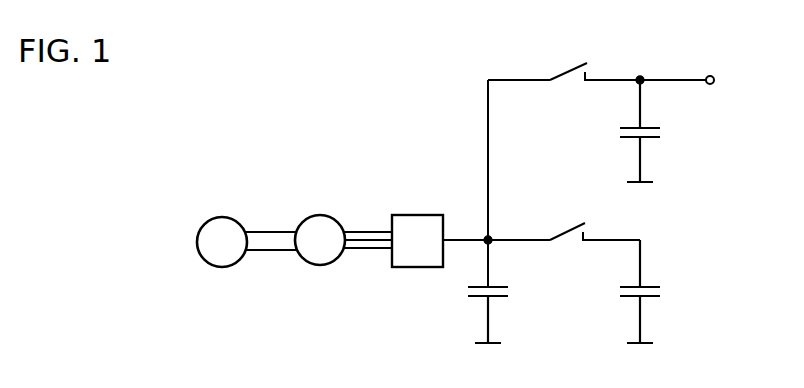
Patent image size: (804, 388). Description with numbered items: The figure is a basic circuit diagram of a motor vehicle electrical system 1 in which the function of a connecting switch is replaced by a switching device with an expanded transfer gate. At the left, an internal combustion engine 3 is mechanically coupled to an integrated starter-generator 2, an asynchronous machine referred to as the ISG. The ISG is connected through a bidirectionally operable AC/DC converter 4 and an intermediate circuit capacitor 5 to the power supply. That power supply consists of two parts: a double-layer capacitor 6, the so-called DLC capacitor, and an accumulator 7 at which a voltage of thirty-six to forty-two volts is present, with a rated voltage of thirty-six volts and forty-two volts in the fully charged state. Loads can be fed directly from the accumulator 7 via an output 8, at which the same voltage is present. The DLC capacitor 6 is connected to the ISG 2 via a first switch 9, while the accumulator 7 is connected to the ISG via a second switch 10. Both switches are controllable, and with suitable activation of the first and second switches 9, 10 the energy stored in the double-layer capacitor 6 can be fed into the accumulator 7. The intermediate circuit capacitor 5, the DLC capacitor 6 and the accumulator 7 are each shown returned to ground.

The motor vehicle electrical system 1 is at (318, 97).
The integrated starter-generator 2 is at (320, 215).
The internal combustion engine 3 is at (222, 217).
The bidirectionally operable AC/DC converter 4 is at (420, 215).
The intermediate circuit capacitor 5 is at (510, 290).
The double-layer capacitor 6 is at (662, 290).
The accumulator 7 is at (662, 131).
The output 8 is at (714, 80).
The first switch 9 is at (568, 228).
The second switch 10 is at (568, 70).